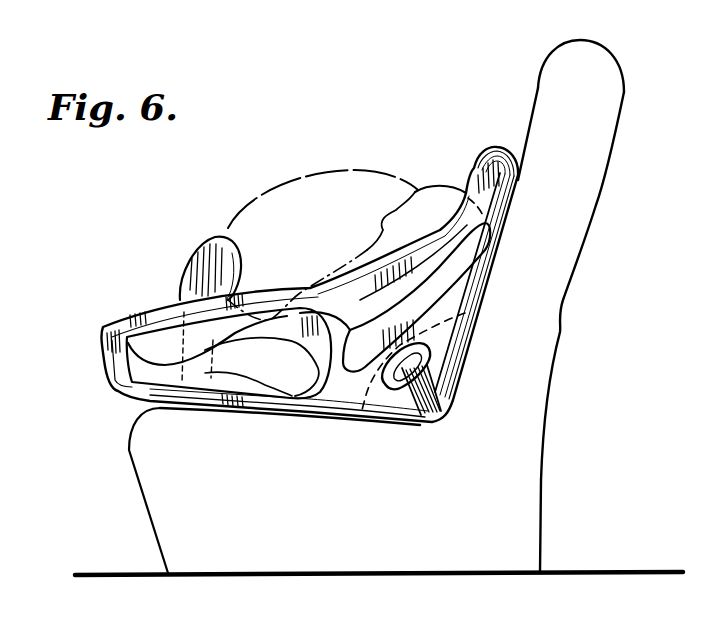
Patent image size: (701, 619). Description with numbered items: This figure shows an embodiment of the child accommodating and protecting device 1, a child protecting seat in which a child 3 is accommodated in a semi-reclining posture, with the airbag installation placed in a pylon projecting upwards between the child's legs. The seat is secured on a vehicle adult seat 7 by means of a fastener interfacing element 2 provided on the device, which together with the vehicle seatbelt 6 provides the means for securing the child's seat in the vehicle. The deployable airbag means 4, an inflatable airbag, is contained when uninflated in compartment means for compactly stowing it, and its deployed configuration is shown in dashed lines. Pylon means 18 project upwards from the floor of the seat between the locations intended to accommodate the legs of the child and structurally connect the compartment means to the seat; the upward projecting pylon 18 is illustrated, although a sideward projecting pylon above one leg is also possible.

The child accommodating and protecting device 1 is at (103, 345).
The fastener interfacing element 2 is at (418, 353).
The child 3 is at (433, 190).
The deployable airbag means 4 is at (333, 172).
The vehicle seatbelt 6 is at (422, 388).
The vehicle adult seat 7 is at (541, 457).
The pylon means 18 is at (183, 275).